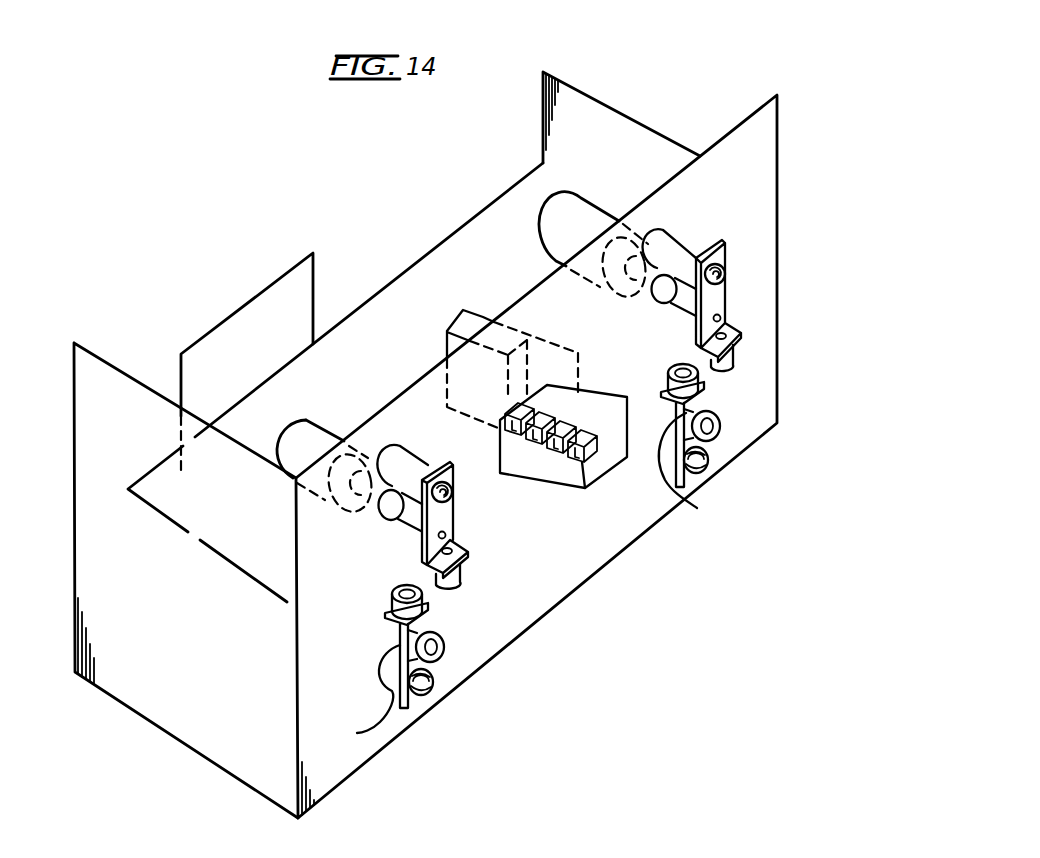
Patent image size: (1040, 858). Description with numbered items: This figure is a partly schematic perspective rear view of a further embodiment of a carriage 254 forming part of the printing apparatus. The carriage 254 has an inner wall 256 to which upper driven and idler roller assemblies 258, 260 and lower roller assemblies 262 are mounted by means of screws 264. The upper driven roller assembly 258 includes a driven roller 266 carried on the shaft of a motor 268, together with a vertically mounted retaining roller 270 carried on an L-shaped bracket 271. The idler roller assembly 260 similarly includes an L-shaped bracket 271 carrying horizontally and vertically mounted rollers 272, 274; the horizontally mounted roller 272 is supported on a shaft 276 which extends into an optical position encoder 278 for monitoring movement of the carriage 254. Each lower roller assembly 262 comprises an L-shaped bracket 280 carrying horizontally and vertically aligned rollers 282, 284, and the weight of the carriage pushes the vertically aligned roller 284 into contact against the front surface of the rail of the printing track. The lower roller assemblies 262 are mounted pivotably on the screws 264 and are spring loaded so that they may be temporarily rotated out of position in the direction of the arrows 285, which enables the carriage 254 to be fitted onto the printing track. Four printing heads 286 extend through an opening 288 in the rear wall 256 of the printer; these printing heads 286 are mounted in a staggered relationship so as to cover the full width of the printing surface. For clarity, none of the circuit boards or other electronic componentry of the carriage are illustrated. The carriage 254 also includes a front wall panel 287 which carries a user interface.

The carriage 254 is at (198, 691).
The inner wall 256 is at (598, 574).
The upper driven roller assembly 258 is at (739, 275).
The idler roller assembly 260 is at (449, 514).
The lower roller assembly 262 is at (452, 675).
The screw 264 is at (428, 693).
The driven roller 266 is at (692, 320).
The motor 268 is at (593, 222).
The retaining roller 270 is at (742, 358).
The L-shaped bracket 271 is at (726, 300).
The horizontally mounted roller 272 is at (412, 545).
The vertically mounted roller 274 is at (453, 583).
The shaft 276 is at (402, 517).
The optical position encoder 278 is at (315, 423).
The L-shaped bracket 280 is at (722, 398).
The horizontally aligned roller 282 is at (445, 652).
The vertically aligned roller 284 is at (392, 597).
The arrow 285 is at (366, 696).
The printing head 286 is at (603, 457).
The front wall panel 287 is at (287, 298).
The opening 288 is at (608, 397).